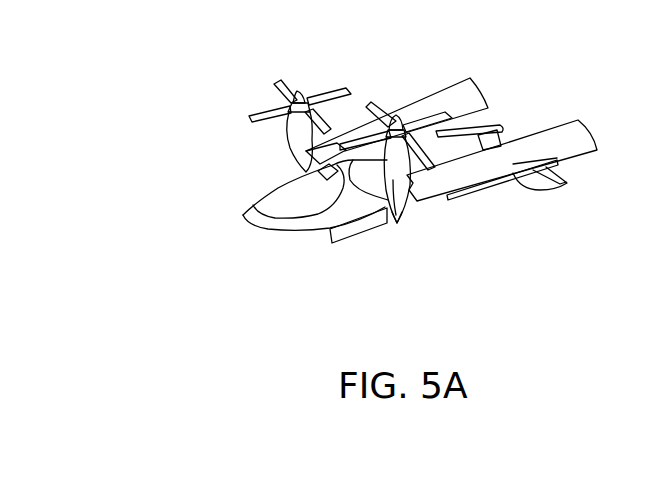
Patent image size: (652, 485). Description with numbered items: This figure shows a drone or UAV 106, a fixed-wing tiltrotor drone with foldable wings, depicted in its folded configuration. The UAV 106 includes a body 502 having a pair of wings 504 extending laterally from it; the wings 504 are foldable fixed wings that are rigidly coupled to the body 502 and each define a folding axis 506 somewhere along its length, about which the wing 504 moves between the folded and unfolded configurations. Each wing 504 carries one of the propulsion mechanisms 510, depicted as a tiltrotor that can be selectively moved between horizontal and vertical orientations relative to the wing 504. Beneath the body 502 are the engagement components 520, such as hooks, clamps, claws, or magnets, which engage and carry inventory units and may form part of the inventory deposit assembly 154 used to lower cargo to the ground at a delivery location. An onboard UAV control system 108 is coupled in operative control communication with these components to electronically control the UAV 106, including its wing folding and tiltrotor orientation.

The UAV 106 is at (220, 232).
The UAV control system 108 is at (330, 164).
The body 502 is at (312, 218).
The wings 504 is at (452, 97).
The folding axis 506 is at (414, 222).
The propulsion mechanisms 510 is at (396, 222).
The engagement components 520 is at (308, 264).
The inventory deposit assembly 154 is at (358, 233).